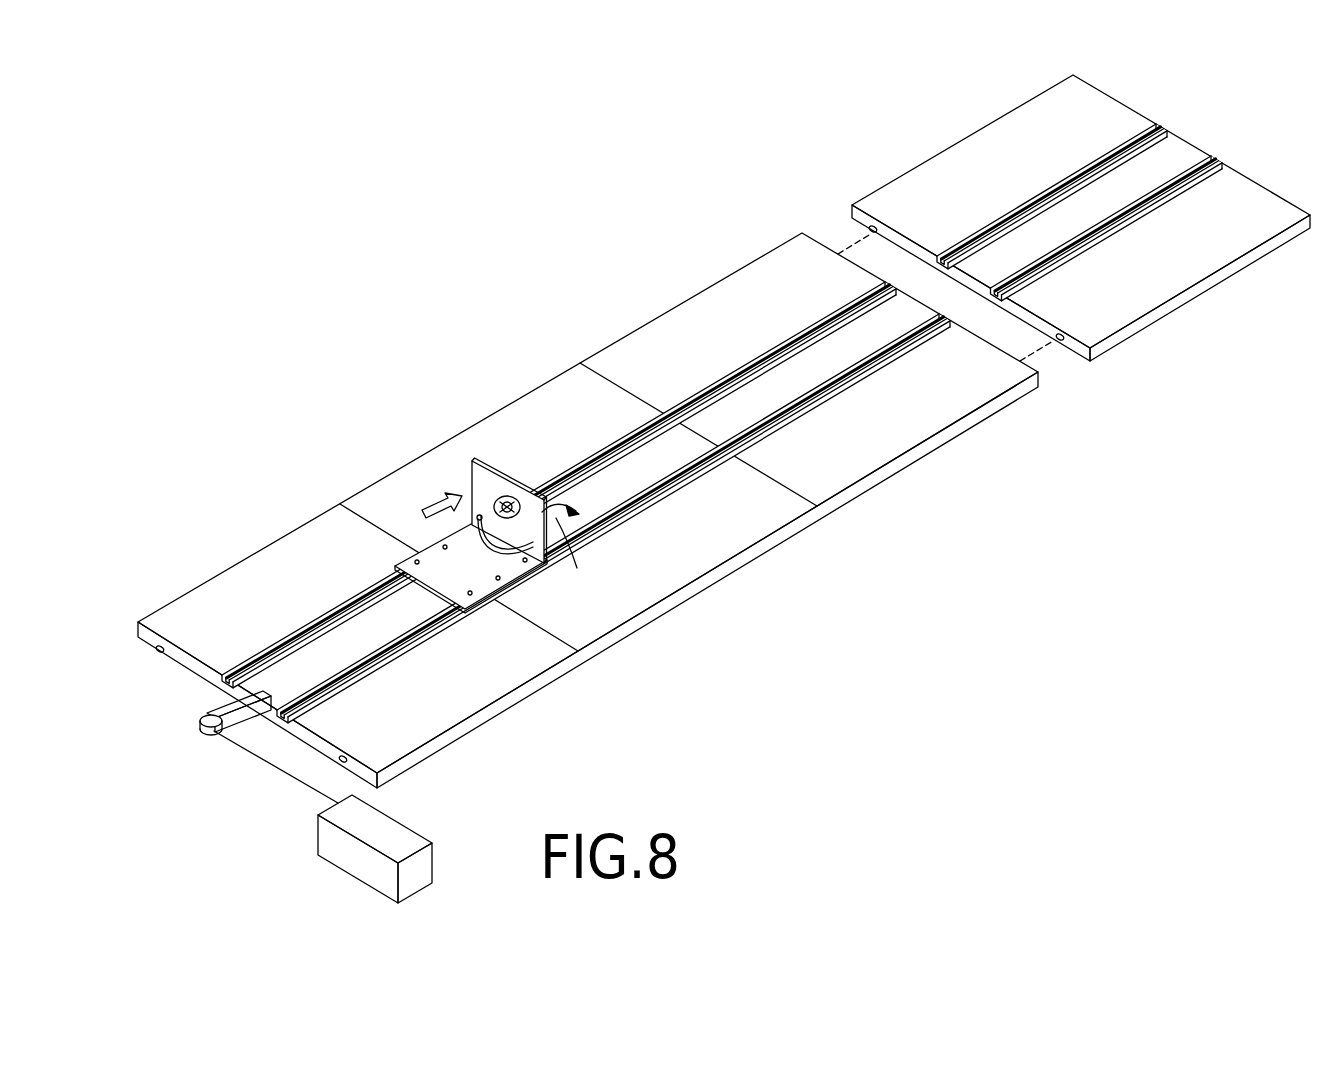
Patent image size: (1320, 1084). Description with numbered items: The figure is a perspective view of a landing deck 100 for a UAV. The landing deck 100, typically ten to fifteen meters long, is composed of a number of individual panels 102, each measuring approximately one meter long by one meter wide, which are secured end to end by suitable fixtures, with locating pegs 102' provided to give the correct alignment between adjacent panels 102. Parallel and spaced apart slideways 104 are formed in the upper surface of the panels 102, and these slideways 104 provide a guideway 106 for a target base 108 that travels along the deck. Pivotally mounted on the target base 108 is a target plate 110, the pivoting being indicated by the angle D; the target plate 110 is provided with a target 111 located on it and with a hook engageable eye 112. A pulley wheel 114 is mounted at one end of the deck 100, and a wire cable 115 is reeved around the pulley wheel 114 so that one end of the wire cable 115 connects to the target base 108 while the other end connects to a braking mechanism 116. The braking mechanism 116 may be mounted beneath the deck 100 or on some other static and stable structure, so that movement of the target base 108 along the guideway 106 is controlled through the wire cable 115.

The landing deck 100 is at (690, 489).
The panel 102 is at (724, 431).
The locating peg 102' is at (588, 494).
The slideway 104 is at (221, 691).
The guideway 106 is at (492, 527).
The target base 108 is at (477, 618).
The target plate 110 is at (485, 461).
The target 111 is at (500, 496).
The hook engageable eye 112 is at (494, 553).
The pulley wheel 114 is at (203, 734).
The wire cable 115 is at (303, 788).
The braking mechanism 116 is at (391, 838).